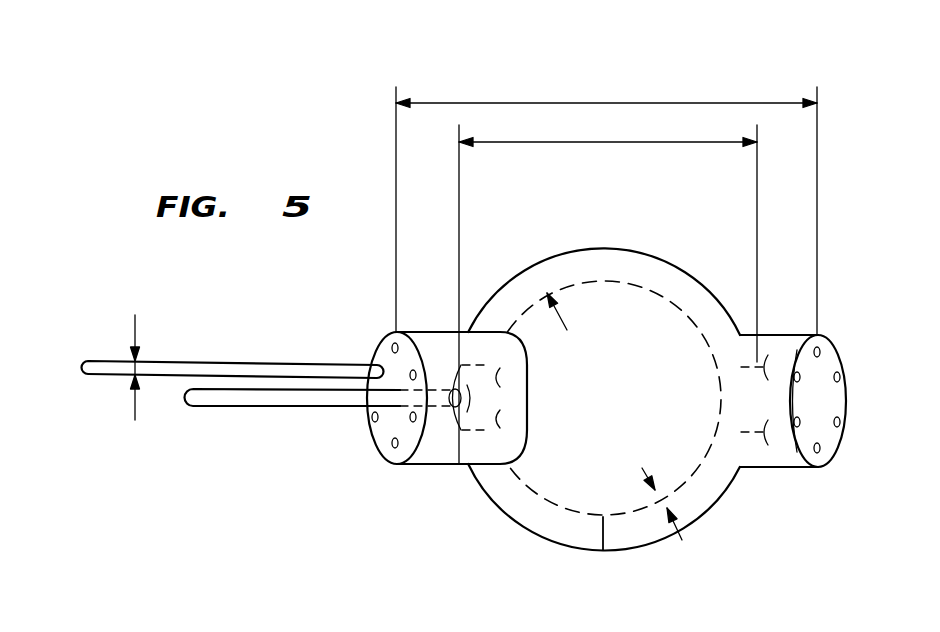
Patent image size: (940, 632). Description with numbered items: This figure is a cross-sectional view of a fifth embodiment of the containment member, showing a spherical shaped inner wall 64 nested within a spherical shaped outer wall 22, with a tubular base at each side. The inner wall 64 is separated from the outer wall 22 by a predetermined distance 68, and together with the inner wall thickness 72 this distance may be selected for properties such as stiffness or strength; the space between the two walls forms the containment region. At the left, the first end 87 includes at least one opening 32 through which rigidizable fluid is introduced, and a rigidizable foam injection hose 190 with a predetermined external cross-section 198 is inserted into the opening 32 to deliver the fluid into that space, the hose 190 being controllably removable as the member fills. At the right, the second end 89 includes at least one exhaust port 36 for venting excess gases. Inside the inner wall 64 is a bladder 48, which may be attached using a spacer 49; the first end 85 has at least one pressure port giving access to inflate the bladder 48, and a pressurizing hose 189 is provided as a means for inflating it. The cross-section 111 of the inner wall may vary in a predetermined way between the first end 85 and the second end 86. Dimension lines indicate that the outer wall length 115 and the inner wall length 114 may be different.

The outer wall 22 is at (722, 507).
The opening 32 is at (372, 448).
The exhaust port 36 is at (840, 378).
The bladder 48 is at (615, 310).
The spacer 49 is at (612, 530).
The inner wall 64 is at (690, 318).
The predetermined distance 68 is at (523, 262).
The inner wall thickness 72 is at (682, 540).
The first end 85 is at (446, 432).
The second end 86 is at (757, 442).
The first end 87 is at (388, 463).
The second end 89 is at (818, 334).
The cross-section of the inner wall 111 is at (466, 440).
The inner wall length 114 is at (523, 138).
The outer wall length 115 is at (617, 103).
The pressurizing hose 189 is at (260, 409).
The rigidizable foam injection hose 190 is at (300, 362).
The predetermined external cross-section 198 is at (138, 320).